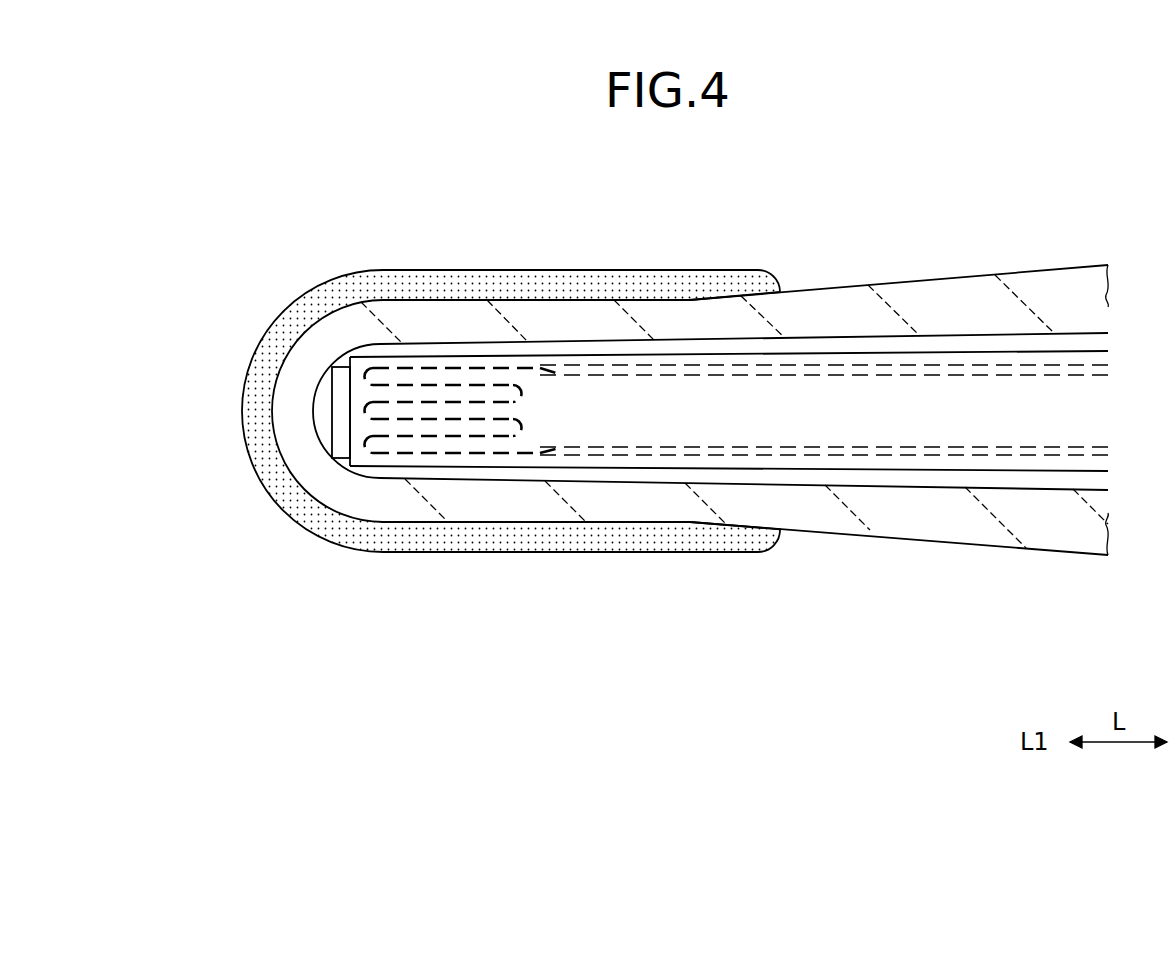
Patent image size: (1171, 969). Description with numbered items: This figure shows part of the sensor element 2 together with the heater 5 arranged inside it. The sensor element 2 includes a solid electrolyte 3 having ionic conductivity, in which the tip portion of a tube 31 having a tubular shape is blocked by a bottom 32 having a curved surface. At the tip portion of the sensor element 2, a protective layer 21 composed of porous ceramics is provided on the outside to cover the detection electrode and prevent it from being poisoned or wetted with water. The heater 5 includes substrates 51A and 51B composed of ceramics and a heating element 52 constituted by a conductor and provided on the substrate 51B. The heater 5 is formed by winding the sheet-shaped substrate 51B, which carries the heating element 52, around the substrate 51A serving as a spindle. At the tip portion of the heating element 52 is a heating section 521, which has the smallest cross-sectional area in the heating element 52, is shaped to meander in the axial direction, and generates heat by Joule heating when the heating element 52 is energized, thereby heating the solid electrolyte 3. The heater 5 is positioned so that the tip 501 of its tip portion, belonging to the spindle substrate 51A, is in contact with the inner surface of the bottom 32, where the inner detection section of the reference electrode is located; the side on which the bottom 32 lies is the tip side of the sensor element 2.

The sensor element 2 is at (1108, 243).
The solid electrolyte 3 is at (1050, 560).
The heater 5 is at (1018, 352).
The protective layer 21 is at (665, 291).
The tube 31 is at (637, 500).
The bottom 32 is at (297, 432).
The tip 501 is at (328, 364).
The substrate 51A is at (342, 450).
The substrate 51B is at (814, 416).
The heating element 52 is at (930, 375).
The heating section 521 is at (455, 386).